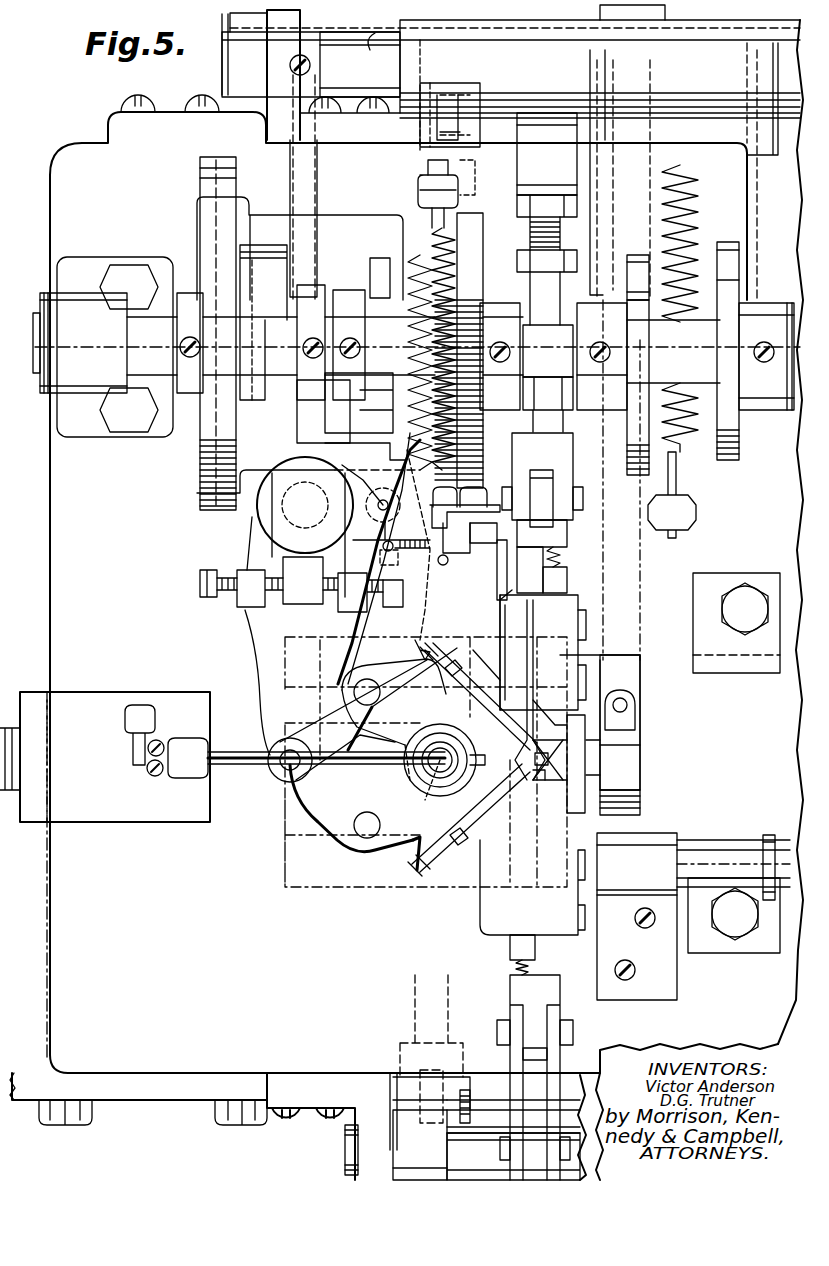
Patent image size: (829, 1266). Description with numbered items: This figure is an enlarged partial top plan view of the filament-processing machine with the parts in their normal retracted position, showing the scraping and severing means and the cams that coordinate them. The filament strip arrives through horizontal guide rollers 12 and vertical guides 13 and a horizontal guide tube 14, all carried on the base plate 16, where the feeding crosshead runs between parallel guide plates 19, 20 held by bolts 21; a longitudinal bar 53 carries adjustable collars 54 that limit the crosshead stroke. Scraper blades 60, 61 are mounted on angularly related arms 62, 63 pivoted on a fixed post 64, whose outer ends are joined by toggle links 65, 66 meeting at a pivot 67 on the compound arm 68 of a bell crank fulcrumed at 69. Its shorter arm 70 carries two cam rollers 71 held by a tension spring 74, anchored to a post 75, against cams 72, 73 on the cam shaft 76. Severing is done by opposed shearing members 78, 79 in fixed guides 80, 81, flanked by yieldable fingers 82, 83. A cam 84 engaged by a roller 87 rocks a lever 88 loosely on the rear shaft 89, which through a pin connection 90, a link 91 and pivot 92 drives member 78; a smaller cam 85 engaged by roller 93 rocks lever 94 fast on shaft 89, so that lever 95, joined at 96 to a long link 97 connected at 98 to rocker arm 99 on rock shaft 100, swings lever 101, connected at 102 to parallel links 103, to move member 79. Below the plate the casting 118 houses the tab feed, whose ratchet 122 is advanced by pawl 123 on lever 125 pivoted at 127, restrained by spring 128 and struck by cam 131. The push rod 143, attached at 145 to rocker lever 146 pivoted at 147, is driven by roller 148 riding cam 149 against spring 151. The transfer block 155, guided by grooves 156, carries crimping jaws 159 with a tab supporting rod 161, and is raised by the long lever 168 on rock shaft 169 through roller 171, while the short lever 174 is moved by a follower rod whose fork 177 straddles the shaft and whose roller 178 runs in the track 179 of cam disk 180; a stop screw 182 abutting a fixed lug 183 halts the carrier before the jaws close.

The guide rods or rollers 12 is at (133, 742).
The vertically disposed guides 13 is at (150, 778).
The horizontal guide tube 14 is at (222, 770).
The base plate 16 is at (406, 600).
The guide plate 19 is at (736, 623).
The guide plate 20 is at (688, 916).
The bolts 21 is at (740, 761).
The longitudinal bar 53 is at (722, 858).
The stops or collars 54 is at (770, 832).
The scraper blade 60 is at (490, 830).
The scraper blade 61 is at (485, 692).
The arm 62 is at (407, 843).
The arm 63 is at (394, 702).
The fixed post 64 is at (394, 769).
The toggle link 65 is at (351, 793).
The toggle link 66 is at (368, 699).
The pivot 67 is at (300, 780).
The bell crank arm 68 is at (262, 678).
The fulcrum 69 is at (305, 505).
The bell crank arm 70 is at (391, 542).
The cam rollers 71 is at (461, 497).
The cam 72 is at (455, 233).
The cam 73 is at (458, 349).
The tension spring 74 is at (420, 262).
The post 75 is at (418, 185).
The cam shaft 76 is at (416, 362).
The shearing member 78 is at (533, 663).
The shearing member 79 is at (541, 947).
The fixed guide 80 is at (529, 652).
The fixed guide 81 is at (532, 887).
The yieldable bar or finger 82 is at (555, 570).
The yieldable bar or finger 83 is at (523, 955).
The cam 84 is at (640, 475).
The cam 85 is at (740, 395).
The roller 87 is at (640, 258).
The lever 88 is at (592, 230).
The rear shaft 89 is at (511, 61).
The pin connection 90 is at (547, 165).
The link 91 is at (528, 275).
The pivot connection 92 is at (585, 495).
The roller 93 is at (735, 242).
The rock lever 94 is at (702, 172).
The rock lever 95 is at (450, 101).
The connection 96 is at (428, 132).
The long link 97 is at (465, 190).
The connection 98 is at (470, 1100).
The rocker arm 99 is at (431, 1128).
The rock shaft 100 is at (345, 1150).
The lever 101 is at (525, 1120).
The connection 102 is at (500, 1150).
The links 103 is at (512, 1062).
The box-like casting 118 is at (283, 855).
The ratchet 122 is at (303, 580).
The actuating pawl 123 is at (395, 610).
The lever 125 is at (370, 460).
The pivot 127 is at (323, 531).
The tension spring 128 is at (468, 552).
The cam 131 is at (308, 437).
The push rod 143 is at (431, 789).
The pivotal attachment 145 is at (417, 745).
The rocker lever 146 is at (415, 648).
The pivot 147 is at (508, 603).
The roller 148 is at (372, 375).
The cam 149 is at (380, 258).
The spring 151 is at (497, 530).
The transfer carrier or block 155 is at (560, 755).
The grooves 156 is at (585, 815).
The crimping jaws or squeezers 159 is at (546, 778).
The tab supporting rod 161 is at (548, 760).
The long lever 168 is at (632, 668).
The rock shaft 169 is at (360, 64).
The roller 171 is at (633, 722).
The short lever 174 is at (318, 257).
The fork 177 is at (248, 400).
The cam roller 178 is at (178, 333).
The cam track 179 is at (214, 228).
The cam disk 180 is at (206, 172).
The stop screw 182 is at (628, 708).
The fixed lug 183 is at (637, 695).